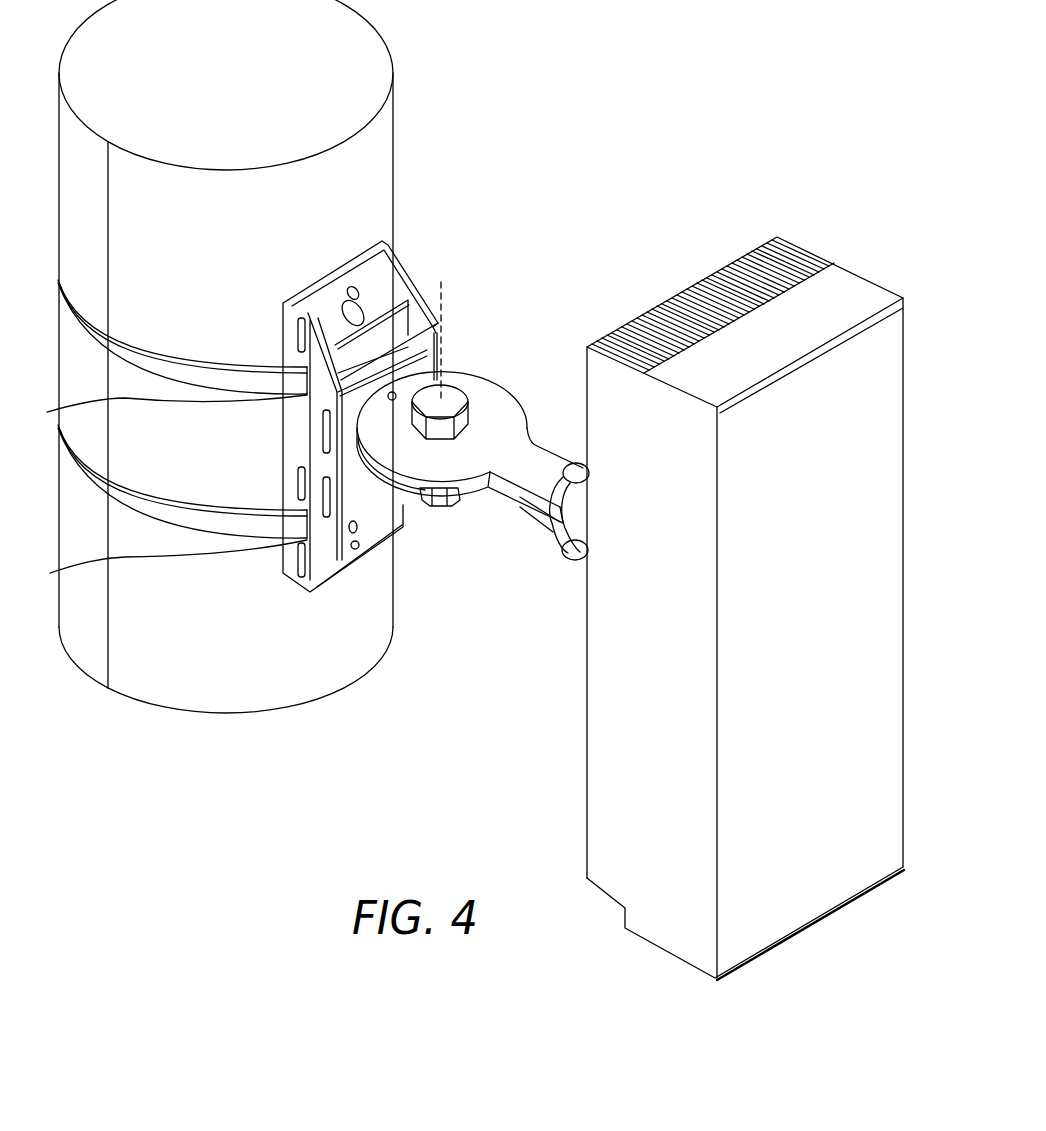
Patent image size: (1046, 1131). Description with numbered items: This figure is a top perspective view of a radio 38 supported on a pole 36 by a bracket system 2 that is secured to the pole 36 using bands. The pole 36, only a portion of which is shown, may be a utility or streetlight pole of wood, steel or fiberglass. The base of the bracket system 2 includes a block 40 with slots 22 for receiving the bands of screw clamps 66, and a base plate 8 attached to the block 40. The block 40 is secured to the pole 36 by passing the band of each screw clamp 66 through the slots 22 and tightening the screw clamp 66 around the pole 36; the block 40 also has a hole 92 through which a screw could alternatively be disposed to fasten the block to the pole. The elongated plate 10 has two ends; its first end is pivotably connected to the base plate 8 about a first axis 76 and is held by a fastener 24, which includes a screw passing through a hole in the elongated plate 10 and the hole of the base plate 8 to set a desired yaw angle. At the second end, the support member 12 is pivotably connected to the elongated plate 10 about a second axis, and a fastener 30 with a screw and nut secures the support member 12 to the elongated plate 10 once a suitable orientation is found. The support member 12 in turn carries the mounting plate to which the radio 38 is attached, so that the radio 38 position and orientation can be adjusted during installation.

The bracket system 2 is at (531, 398).
The base plate 8 is at (425, 492).
The elongated plate 10 is at (543, 440).
The support member 12 is at (568, 557).
The slot 22 is at (160, 493).
The fastener 24 is at (457, 400).
The fastener 30 is at (568, 480).
The pole 36 is at (387, 158).
The radio 38 is at (657, 919).
The block 40 is at (403, 253).
The screw clamp 66 is at (115, 370).
The first axis 76 is at (442, 283).
The hole 92 is at (362, 316).